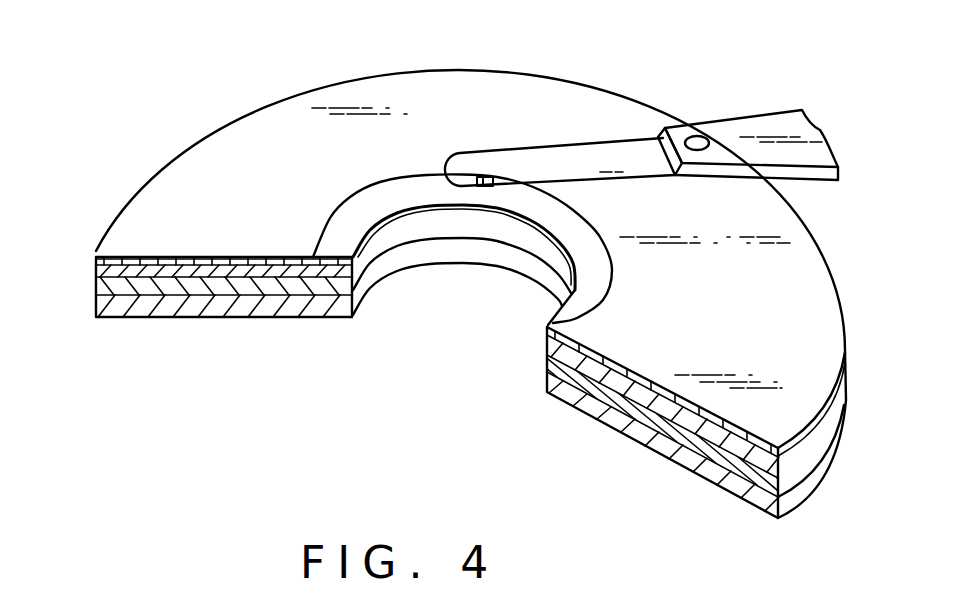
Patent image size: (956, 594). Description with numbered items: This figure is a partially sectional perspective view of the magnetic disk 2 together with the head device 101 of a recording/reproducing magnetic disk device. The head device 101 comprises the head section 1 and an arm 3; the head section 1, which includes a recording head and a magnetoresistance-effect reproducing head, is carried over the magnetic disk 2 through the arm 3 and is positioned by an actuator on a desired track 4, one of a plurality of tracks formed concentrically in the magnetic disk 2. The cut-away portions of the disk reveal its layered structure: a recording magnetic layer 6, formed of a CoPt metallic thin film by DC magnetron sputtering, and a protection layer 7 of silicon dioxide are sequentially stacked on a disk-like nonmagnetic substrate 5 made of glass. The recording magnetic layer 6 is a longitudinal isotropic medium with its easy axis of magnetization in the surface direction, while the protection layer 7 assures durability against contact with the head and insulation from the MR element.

The head section 1 is at (458, 187).
The magnetic disk 2 is at (853, 284).
The arm 3 is at (640, 138).
The track 4 is at (351, 197).
The nonmagnetic substrate 5 is at (137, 306).
The recording magnetic layer 6 is at (277, 297).
The protection layer 7 is at (162, 257).
The head device 101 is at (744, 107).